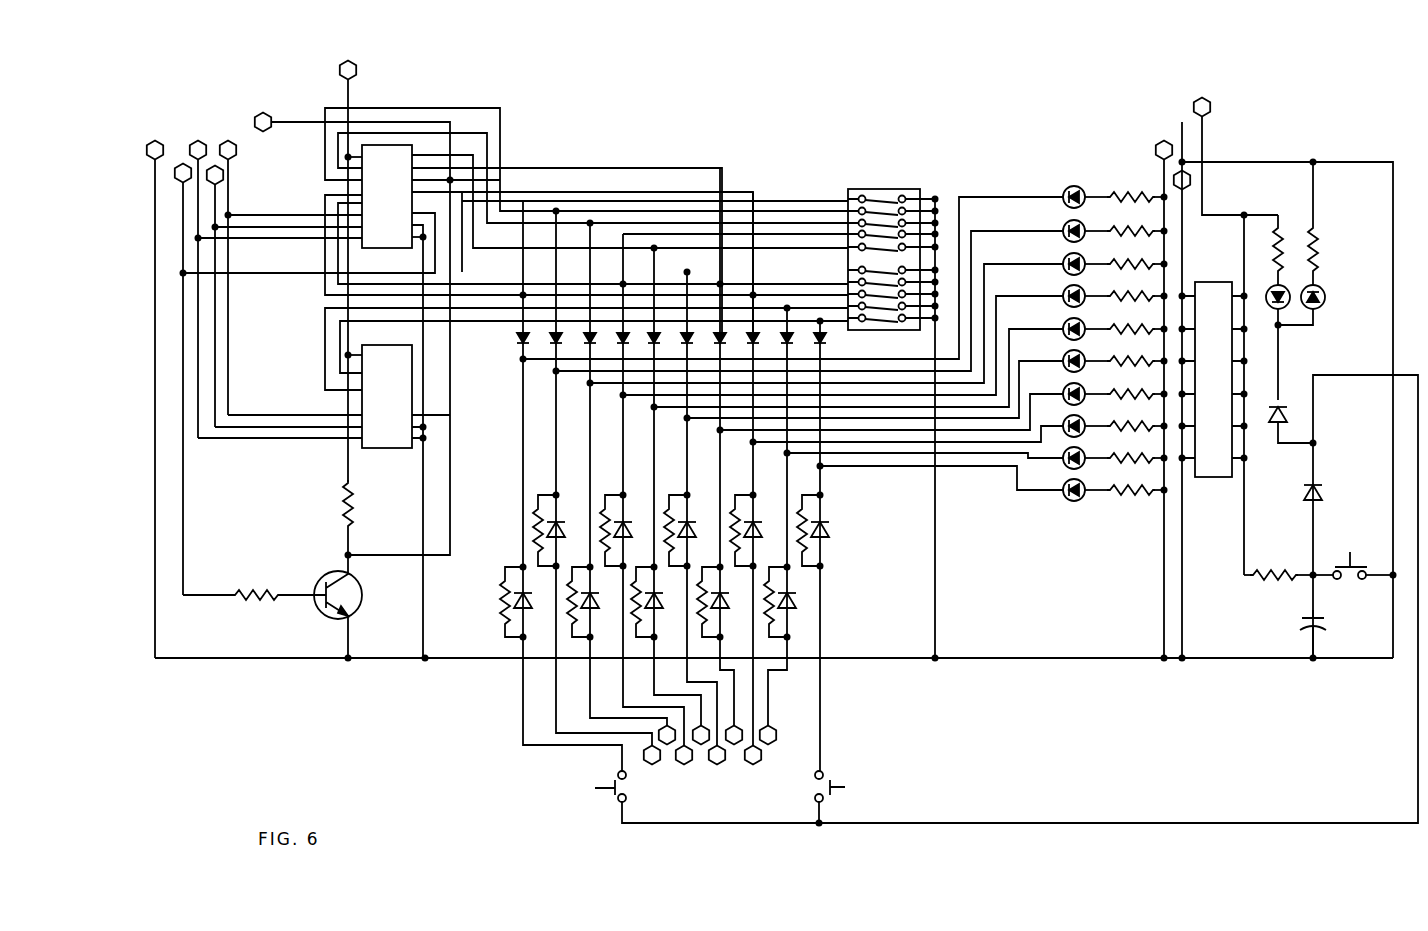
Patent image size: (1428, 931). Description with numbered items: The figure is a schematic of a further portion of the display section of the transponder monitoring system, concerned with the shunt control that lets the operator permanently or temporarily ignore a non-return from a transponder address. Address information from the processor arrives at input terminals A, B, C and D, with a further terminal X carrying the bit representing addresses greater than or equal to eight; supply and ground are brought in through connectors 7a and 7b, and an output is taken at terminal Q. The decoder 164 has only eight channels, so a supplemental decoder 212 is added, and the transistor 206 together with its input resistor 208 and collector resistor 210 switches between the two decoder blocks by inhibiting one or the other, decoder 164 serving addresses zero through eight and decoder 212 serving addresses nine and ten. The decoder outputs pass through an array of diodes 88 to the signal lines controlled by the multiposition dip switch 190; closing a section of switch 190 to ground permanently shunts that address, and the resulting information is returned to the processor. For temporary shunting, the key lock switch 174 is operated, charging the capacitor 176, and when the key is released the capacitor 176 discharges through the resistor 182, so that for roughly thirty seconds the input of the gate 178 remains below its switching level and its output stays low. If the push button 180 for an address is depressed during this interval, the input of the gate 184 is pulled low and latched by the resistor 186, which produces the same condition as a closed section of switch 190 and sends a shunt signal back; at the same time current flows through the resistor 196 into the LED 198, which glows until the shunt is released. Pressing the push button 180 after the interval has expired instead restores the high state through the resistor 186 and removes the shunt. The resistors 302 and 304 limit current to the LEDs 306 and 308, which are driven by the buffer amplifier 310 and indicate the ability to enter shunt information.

The power supply connector 7a is at (354, 61).
The ground connector 7b is at (148, 154).
The input terminal A is at (227, 141).
The input terminal B is at (221, 176).
The input terminal C is at (201, 140).
The input terminal D is at (180, 165).
The input terminal X is at (268, 128).
The terminal Q is at (1157, 143).
The decoder 164 is at (384, 150).
The supplemental decoder 212 is at (400, 396).
The collector resistor 210 is at (342, 500).
The input resistor 208 is at (248, 590).
The transistor 206 is at (322, 608).
The diode matrix 88 is at (582, 332).
The multiposition switch 190 is at (883, 193).
The LED 198 is at (1050, 245).
The resistor 196 is at (1108, 256).
The resistor 186 is at (562, 630).
The gate 184 is at (588, 610).
The push button 180 is at (840, 782).
The resistor 302 is at (1288, 235).
The resistor 304 is at (1320, 245).
The LED 306 is at (1270, 288).
The LED 308 is at (1324, 290).
The buffer amplifier 310 is at (1292, 395).
The gate 178 is at (1320, 492).
The resistor 182 is at (1282, 565).
The key lock switch 174 is at (1358, 552).
The capacitor 176 is at (1302, 616).